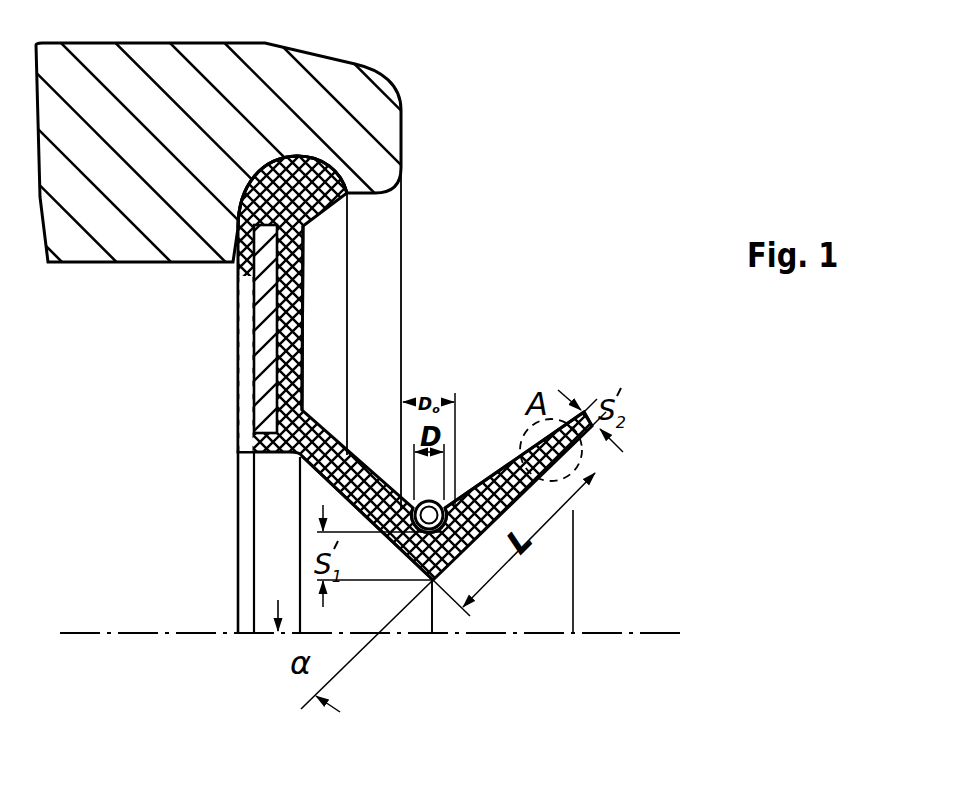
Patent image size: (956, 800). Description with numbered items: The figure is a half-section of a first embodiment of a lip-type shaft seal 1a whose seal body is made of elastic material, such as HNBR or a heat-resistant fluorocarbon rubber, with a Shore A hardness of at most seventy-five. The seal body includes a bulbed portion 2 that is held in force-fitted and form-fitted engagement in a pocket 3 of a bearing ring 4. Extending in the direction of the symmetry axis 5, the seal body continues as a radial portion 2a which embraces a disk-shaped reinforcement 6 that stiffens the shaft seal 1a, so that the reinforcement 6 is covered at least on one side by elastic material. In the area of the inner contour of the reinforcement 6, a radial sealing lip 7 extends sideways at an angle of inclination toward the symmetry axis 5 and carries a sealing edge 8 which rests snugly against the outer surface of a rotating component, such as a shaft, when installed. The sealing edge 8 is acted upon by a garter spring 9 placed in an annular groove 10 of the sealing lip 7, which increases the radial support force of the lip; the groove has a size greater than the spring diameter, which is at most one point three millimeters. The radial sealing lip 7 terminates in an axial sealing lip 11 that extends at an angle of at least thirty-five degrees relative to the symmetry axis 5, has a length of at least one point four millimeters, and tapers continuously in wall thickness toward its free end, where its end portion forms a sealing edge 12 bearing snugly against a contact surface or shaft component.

The lip-type shaft seal 1a is at (434, 443).
The bulbed portion 2 is at (348, 217).
The radial portion 2a is at (303, 313).
The pocket 3 is at (340, 157).
The bearing ring 4 is at (377, 117).
The symmetry axis 5 is at (100, 633).
The disk-shaped reinforcement 6 is at (268, 328).
The radial sealing lip 7 is at (330, 500).
The sealing edge 8 is at (434, 583).
The garter spring 9 is at (445, 505).
The annular groove 10 is at (405, 515).
The axial sealing lip 11 is at (490, 472).
The sealing edge 12 is at (588, 452).